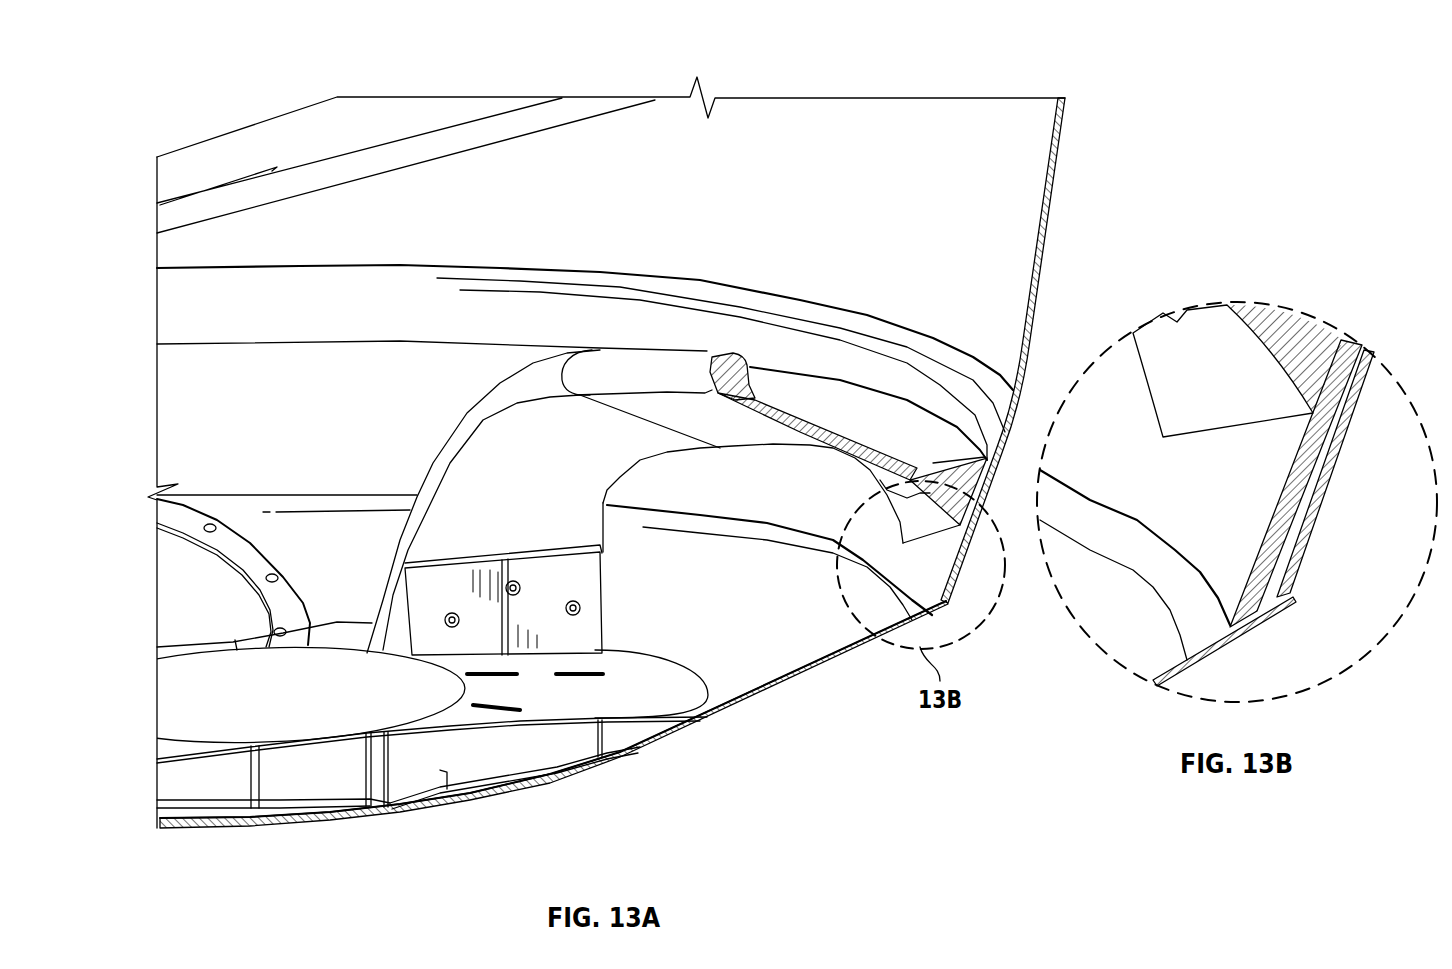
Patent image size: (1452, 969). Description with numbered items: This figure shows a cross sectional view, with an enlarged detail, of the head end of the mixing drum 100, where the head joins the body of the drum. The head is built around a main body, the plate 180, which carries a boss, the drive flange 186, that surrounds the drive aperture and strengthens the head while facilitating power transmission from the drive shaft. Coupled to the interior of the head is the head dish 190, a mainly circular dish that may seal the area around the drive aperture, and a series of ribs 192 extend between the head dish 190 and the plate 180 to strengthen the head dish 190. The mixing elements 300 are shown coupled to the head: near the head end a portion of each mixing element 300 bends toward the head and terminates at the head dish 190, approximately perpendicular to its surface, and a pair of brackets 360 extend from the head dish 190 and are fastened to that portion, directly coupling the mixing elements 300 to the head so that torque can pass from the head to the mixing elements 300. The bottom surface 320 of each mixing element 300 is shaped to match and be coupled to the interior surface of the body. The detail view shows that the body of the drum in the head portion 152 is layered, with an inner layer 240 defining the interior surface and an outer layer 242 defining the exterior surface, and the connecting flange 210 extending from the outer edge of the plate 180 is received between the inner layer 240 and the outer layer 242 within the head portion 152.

In FIG. 13A, the mixing drum 100 is at (140, 112).
In FIG. 13A, the head portion 152 is at (1018, 238).
In FIG. 13A, the plate 180 is at (828, 672).
In FIG. 13A, the drive flange 186 is at (303, 787).
In FIG. 13A, the head dish 190 is at (302, 704).
In FIG. 13A, the ribs 192 is at (236, 830).
In FIG. 13A, the mixing element 300 is at (633, 367).
In FIG. 13A, the bracket 360 is at (523, 642).
In FIG. 13B, the bottom surface 320 is at (1318, 410).
In FIG. 13B, the outer layer 242 is at (1313, 510).
In FIG. 13B, the connecting flange 210 is at (1287, 545).
In FIG. 13B, the inner layer 240 is at (1270, 578).